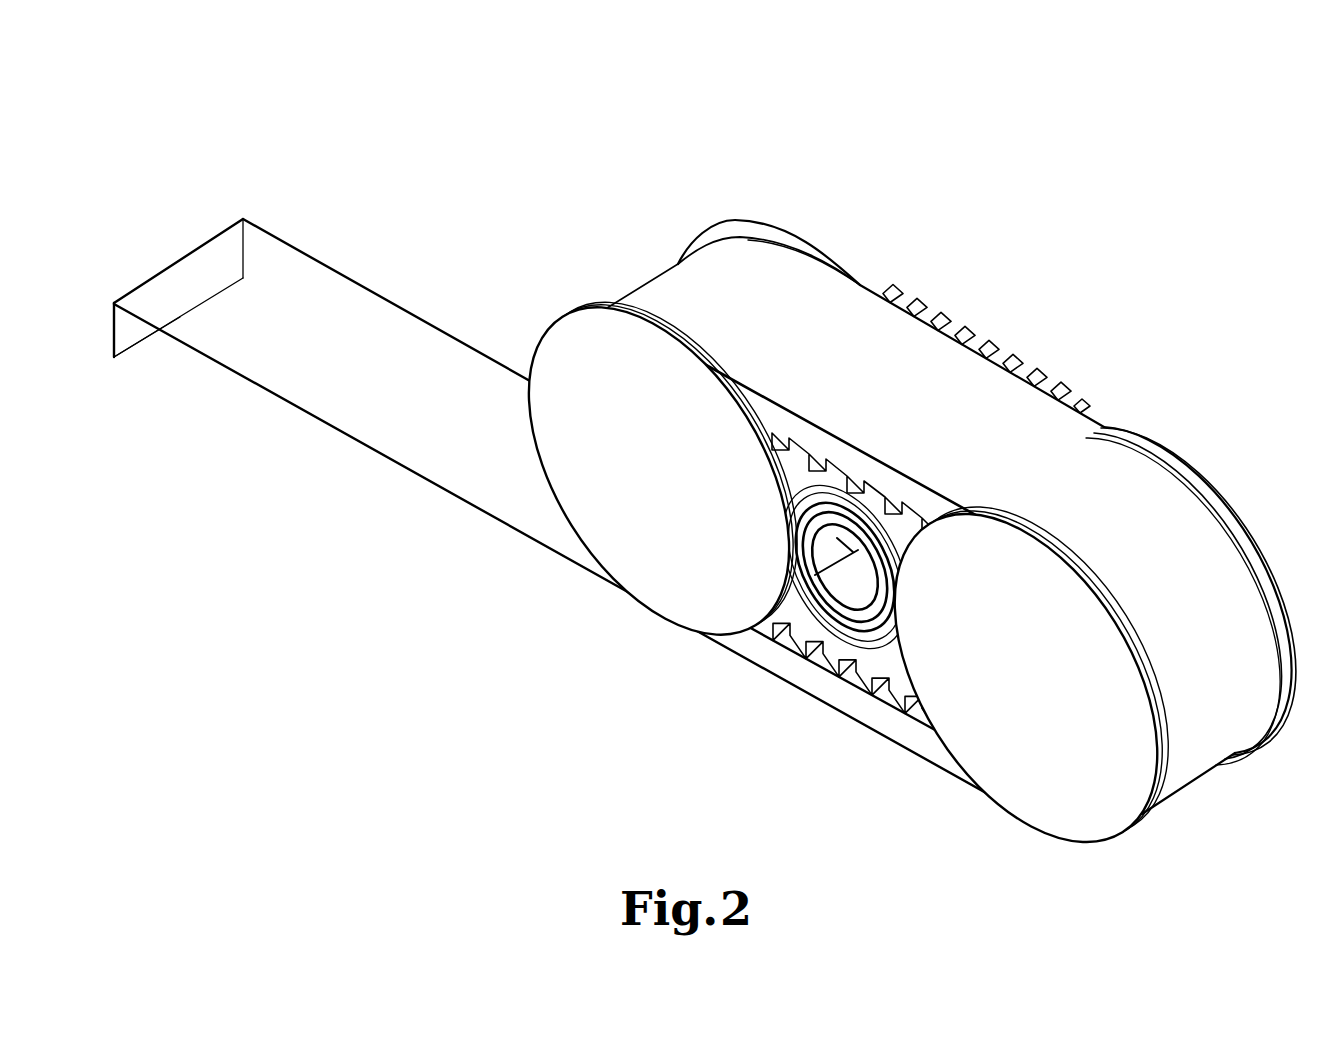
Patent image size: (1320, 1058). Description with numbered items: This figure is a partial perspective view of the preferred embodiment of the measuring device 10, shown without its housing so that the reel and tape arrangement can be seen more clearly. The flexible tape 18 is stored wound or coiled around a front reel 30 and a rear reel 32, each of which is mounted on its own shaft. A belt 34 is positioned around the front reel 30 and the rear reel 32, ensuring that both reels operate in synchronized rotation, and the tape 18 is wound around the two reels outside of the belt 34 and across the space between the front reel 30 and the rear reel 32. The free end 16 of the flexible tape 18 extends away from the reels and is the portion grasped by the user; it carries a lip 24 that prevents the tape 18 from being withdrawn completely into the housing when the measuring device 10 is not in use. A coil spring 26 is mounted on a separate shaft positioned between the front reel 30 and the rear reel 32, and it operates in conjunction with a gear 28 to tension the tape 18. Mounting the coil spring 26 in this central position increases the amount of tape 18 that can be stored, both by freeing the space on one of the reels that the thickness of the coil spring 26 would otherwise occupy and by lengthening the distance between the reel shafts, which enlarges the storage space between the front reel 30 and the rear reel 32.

The measuring device 10 is at (1076, 144).
The free end 16 is at (180, 260).
The flexible tape 18 is at (383, 452).
The lip 24 is at (132, 352).
The coil spring 26 is at (826, 625).
The gear 28 is at (1022, 342).
The front reel 30 is at (547, 335).
The rear reel 32 is at (1200, 474).
The belt 34 is at (770, 433).